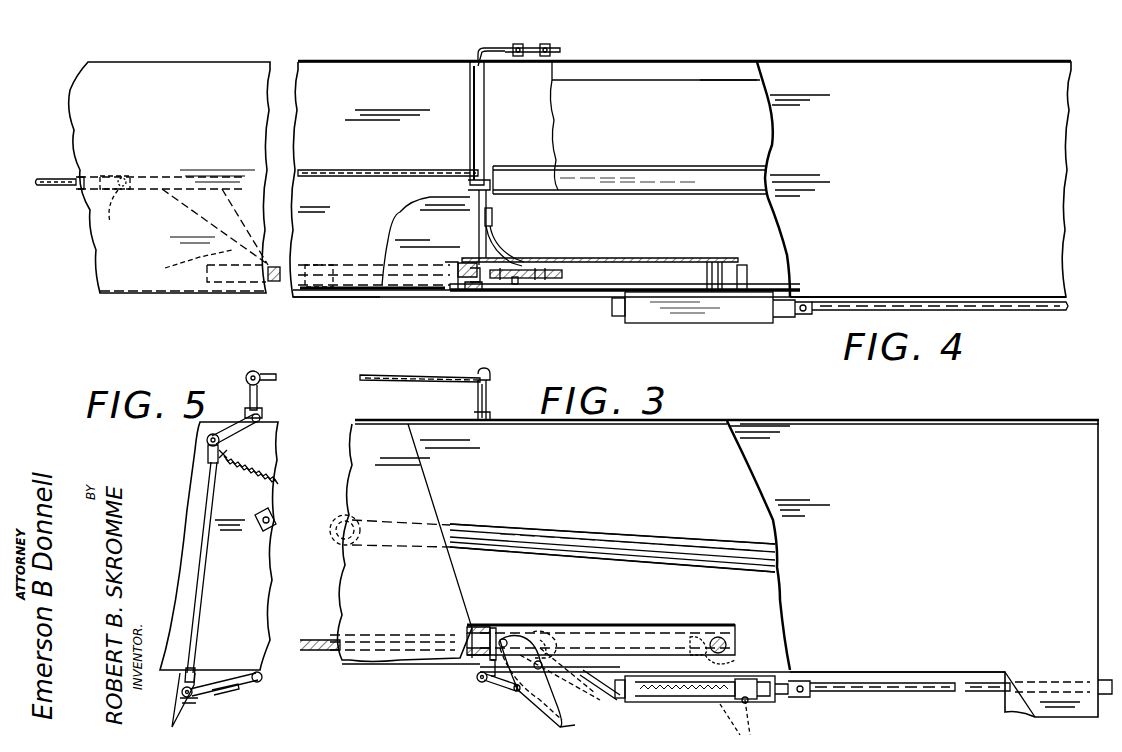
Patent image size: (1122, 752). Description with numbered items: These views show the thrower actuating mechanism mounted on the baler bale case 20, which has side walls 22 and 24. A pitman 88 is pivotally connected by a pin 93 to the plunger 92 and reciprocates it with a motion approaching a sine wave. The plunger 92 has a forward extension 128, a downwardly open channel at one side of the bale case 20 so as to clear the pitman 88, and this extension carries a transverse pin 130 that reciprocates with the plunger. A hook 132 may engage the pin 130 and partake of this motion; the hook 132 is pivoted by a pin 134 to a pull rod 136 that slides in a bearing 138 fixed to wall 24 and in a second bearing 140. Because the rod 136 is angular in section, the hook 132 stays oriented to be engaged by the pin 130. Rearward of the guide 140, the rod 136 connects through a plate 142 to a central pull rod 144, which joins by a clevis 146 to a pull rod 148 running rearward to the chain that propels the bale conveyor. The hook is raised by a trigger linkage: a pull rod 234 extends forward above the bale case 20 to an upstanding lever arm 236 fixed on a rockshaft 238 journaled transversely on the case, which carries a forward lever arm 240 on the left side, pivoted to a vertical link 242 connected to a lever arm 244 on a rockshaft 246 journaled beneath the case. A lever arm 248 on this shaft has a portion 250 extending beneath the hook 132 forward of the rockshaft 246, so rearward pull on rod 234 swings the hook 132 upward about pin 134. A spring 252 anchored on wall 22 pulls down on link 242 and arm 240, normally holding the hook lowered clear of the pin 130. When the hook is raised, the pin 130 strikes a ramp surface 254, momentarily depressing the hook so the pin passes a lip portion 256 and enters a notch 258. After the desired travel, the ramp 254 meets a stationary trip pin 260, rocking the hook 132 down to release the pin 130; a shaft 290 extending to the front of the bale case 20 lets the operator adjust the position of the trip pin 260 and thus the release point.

In FIG. 4, the bale case 20 is at (160, 60).
In FIG. 5, the side wall 22 is at (219, 562).
In FIG. 4, the side wall 24 is at (390, 298).
In FIG. 3, the side wall 24 is at (706, 568).
In FIG. 4, the pitman 88 is at (680, 178).
In FIG. 3, the pitman 88 is at (695, 545).
In FIG. 4, the plunger 92 is at (384, 241).
In FIG. 3, the plunger 92 is at (392, 615).
In FIG. 3, the pin 93 is at (385, 508).
In FIG. 4, the forward extension 128 is at (620, 236).
In FIG. 3, the forward extension 128 is at (680, 607).
In FIG. 4, the pin 130 is at (708, 262).
In FIG. 3, the pin 130 is at (738, 645).
In FIG. 4, the hook 132 is at (560, 248).
In FIG. 5, the hook 132 is at (172, 724).
In FIG. 3, the hook 132 is at (576, 725).
In FIG. 3, the pin 134 is at (508, 643).
In FIG. 4, the pull rod 136 is at (438, 275).
In FIG. 3, the pull rod 136 is at (466, 640).
In FIG. 4, the bearing 138 is at (472, 297).
In FIG. 3, the bearing 138 is at (478, 628).
In FIG. 4, the bearing 140 is at (310, 300).
In FIG. 4, the plate 142 is at (205, 235).
In FIG. 4, the pull rod 144 is at (146, 178).
In FIG. 4, the clevis 146 is at (126, 213).
In FIG. 4, the pull rod 148 is at (52, 190).
In FIG. 4, the pull rod 234 is at (385, 148).
In FIG. 5, the pull rod 234 is at (260, 372).
In FIG. 3, the pull rod 234 is at (425, 372).
In FIG. 5, the lever arm 236 is at (262, 397).
In FIG. 3, the lever arm 236 is at (476, 398).
In FIG. 4, the rockshaft 238 is at (470, 125).
In FIG. 4, the lever arm 240 is at (515, 30).
In FIG. 5, the lever arm 240 is at (262, 426).
In FIG. 4, the link 242 is at (536, 44).
In FIG. 5, the link 242 is at (205, 565).
In FIG. 5, the lever arm 244 is at (210, 686).
In FIG. 4, the rockshaft 246 is at (488, 204).
In FIG. 5, the rockshaft 246 is at (262, 676).
In FIG. 4, the lever arm 248 is at (506, 246).
In FIG. 5, the lever arm 248 is at (212, 695).
In FIG. 3, the lever arm 248 is at (500, 690).
In FIG. 4, the portion 250 is at (518, 286).
In FIG. 3, the portion 250 is at (517, 678).
In FIG. 5, the spring 252 is at (250, 478).
In FIG. 3, the ramp surface 254 is at (575, 695).
In FIG. 3, the lip portion 256 is at (558, 640).
In FIG. 3, the notch 258 is at (545, 690).
In FIG. 4, the trip pin 260 is at (742, 266).
In FIG. 3, the trip pin 260 is at (748, 703).
In FIG. 4, the shaft 290 is at (1018, 310).
In FIG. 3, the shaft 290 is at (878, 692).